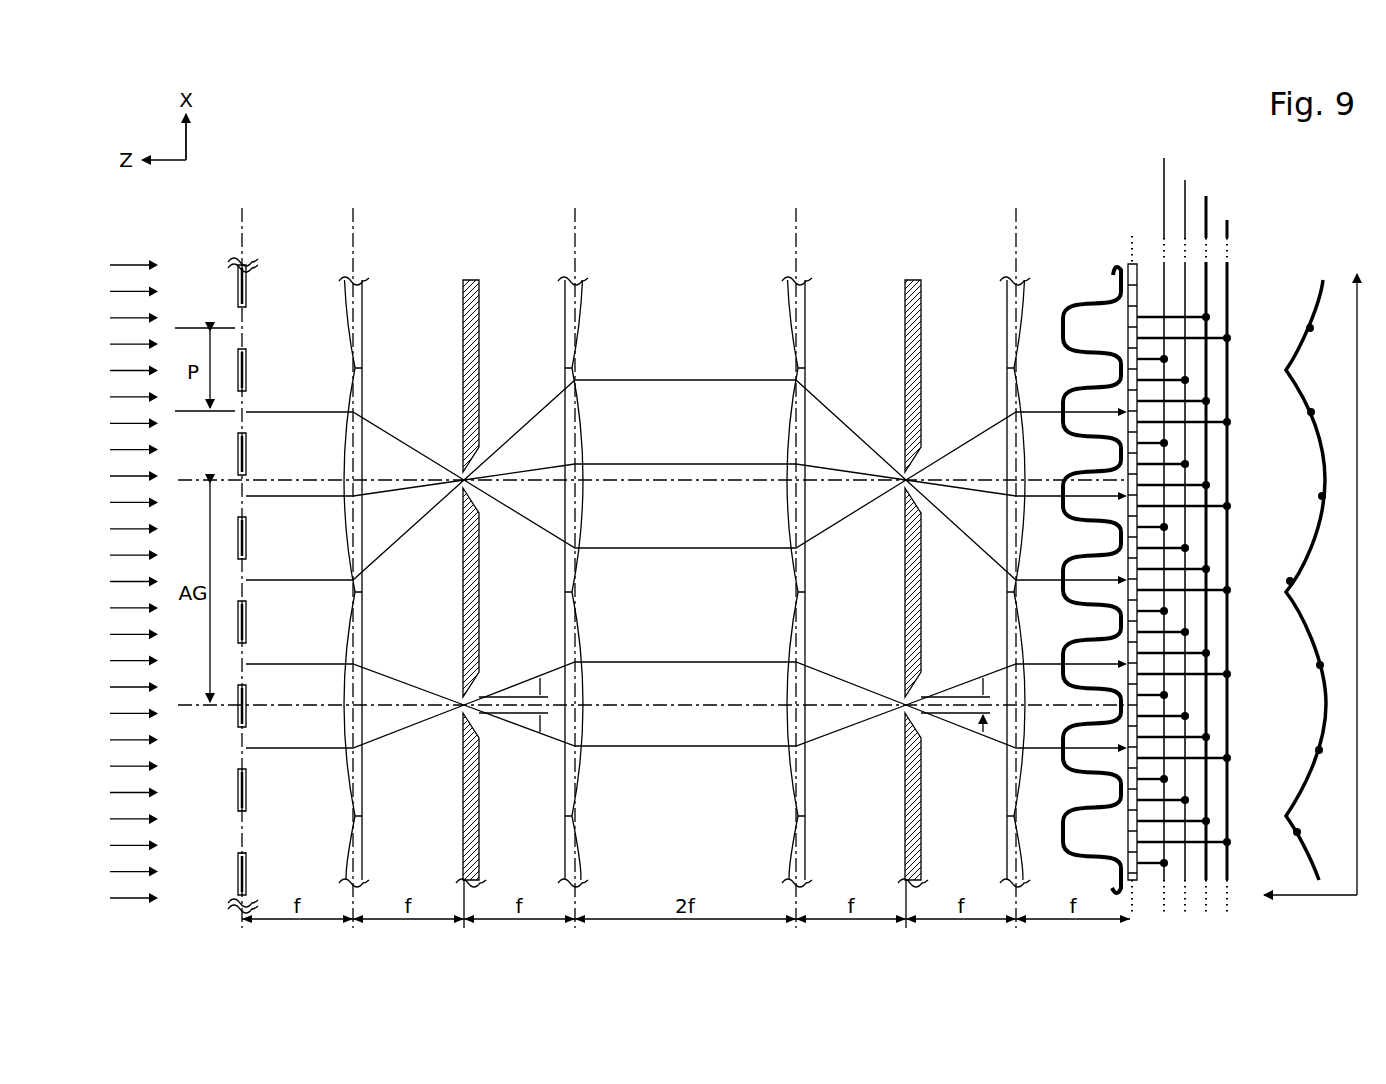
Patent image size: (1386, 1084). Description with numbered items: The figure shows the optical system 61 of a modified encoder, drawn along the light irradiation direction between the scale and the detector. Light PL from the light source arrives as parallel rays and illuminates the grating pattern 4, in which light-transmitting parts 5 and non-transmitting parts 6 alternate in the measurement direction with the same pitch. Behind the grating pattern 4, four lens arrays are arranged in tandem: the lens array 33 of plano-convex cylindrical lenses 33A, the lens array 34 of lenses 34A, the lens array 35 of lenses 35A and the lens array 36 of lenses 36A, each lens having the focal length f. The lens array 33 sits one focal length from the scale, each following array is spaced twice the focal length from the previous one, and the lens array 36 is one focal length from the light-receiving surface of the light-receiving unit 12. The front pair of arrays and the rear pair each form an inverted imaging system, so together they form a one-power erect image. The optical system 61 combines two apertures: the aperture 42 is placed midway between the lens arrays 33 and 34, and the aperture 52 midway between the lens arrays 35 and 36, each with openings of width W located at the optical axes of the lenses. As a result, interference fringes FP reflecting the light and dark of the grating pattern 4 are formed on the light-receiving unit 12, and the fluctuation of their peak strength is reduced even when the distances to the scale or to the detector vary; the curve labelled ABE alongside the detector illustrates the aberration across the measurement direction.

The grating pattern 4 is at (229, 245).
The light-transmitting parts 5 is at (242, 834).
The non-transmitting parts 6 is at (242, 876).
The light-receiving unit 12 is at (1109, 215).
The lens array 33 is at (332, 250).
The lenses 33A is at (380, 580).
The lens array 34 is at (546, 250).
The lenses 34A is at (545, 572).
The lens array 35 is at (776, 250).
The lenses 35A is at (822, 580).
The lens array 36 is at (988, 250).
The lenses 36A is at (987, 571).
The aperture 42 is at (464, 250).
The aperture 52 is at (906, 250).
The optical system 61 is at (978, 174).
The light PL is at (126, 250).
The interference fringes FP is at (1086, 312).
The aberration curve ABE is at (1325, 278).
The width of the opening W is at (537, 715).